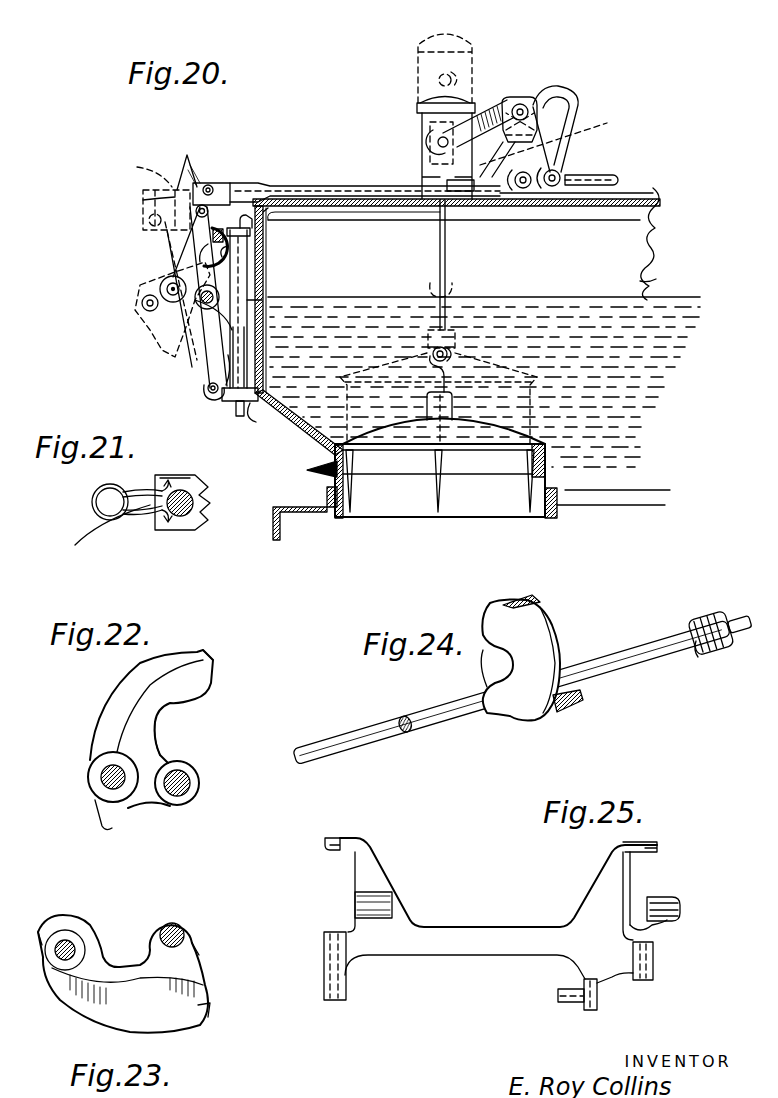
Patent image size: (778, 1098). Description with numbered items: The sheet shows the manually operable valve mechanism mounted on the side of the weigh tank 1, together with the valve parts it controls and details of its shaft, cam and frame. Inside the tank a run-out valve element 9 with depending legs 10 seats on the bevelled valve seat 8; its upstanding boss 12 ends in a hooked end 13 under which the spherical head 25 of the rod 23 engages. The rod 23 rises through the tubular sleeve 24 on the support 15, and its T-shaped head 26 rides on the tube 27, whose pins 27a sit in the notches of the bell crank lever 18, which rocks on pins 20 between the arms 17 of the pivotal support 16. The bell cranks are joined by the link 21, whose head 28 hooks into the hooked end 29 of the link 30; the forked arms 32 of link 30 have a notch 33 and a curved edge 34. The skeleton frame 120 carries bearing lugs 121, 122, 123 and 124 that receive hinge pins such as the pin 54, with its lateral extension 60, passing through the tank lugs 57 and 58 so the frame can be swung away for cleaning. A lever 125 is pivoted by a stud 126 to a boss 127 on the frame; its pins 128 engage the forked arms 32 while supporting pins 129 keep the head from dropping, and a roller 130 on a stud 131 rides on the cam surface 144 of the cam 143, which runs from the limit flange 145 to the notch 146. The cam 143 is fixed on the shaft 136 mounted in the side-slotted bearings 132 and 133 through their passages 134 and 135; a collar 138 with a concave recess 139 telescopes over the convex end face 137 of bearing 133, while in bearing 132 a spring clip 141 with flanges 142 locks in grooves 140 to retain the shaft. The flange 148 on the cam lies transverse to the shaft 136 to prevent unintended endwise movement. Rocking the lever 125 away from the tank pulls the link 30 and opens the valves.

In FIG. 20, the weigh tank 1 is at (297, 427).
In FIG. 20, the bevelled valve seat 8 is at (512, 438).
In FIG. 20, the run-out valve element 9 is at (444, 432).
In FIG. 20, the depending legs 10 is at (355, 505).
In FIG. 20, the upstanding boss 12 is at (449, 412).
In FIG. 20, the hooked end 13 is at (417, 360).
In FIG. 20, the support 15 is at (653, 182).
In FIG. 20, the pivotal support 16 is at (557, 158).
In FIG. 20, the arms 17 is at (520, 104).
In FIG. 20, the bell crank lever 18 is at (562, 107).
In FIG. 20, the pins 20 is at (527, 104).
In FIG. 20, the link 21 is at (593, 172).
In FIG. 20, the link or rod 23 is at (447, 257).
In FIG. 20, the tubular sleeve 24 is at (443, 197).
In FIG. 20, the spherical head 25 is at (448, 348).
In FIG. 20, the T-shaped head 26 is at (417, 52).
In FIG. 20, the tube 27 is at (417, 73).
In FIG. 20, the pins 27a is at (436, 138).
In FIG. 20, the head 28 is at (520, 190).
In FIG. 20, the hooked end 29 is at (530, 190).
In FIG. 20, the link 30 is at (333, 177).
In FIG. 20, the forked arms 32 is at (260, 170).
In FIG. 20, the notch 33 is at (189, 164).
In FIG. 20, the curved edge 34 is at (170, 197).
In FIG. 20, the pin 54 is at (247, 303).
In FIG. 20, the bearing boss 57 is at (252, 240).
In FIG. 20, the bearing boss 58 is at (262, 410).
In FIG. 20, the lateral extension 60 is at (247, 222).
In FIG. 20, the skeleton frame 120 is at (247, 280).
In FIG. 25, the skeleton frame 120 is at (508, 925).
In FIG. 25, the bearing lug 121 is at (325, 845).
In FIG. 25, the bearing lug 122 is at (347, 992).
In FIG. 20, the bearing lug 123 is at (268, 225).
In FIG. 25, the bearing lug 123 is at (660, 848).
In FIG. 20, the bearing lug 124 is at (228, 368).
In FIG. 25, the bearing lug 124 is at (655, 965).
In FIG. 20, the lever 125 is at (230, 362).
In FIG. 20, the stud 126 is at (207, 389).
In FIG. 25, the stud 126 is at (558, 993).
In FIG. 20, the boss 127 is at (217, 407).
In FIG. 25, the boss 127 is at (598, 1000).
In FIG. 20, the pins 128 is at (210, 183).
In FIG. 20, the supporting pins 129 is at (149, 223).
In FIG. 20, the roller 130 is at (140, 297).
In FIG. 22, the roller 130 is at (103, 763).
In FIG. 23, the roller 130 is at (50, 960).
In FIG. 20, the stud 131 is at (170, 272).
In FIG. 21, the bearing 132 is at (212, 495).
In FIG. 25, the bearing 132 is at (385, 897).
In FIG. 25, the bearing 133 is at (668, 897).
In FIG. 21, the bearing passage 134 is at (185, 490).
In FIG. 25, the bearing passage 134 is at (357, 912).
In FIG. 25, the bearing passage 135 is at (683, 912).
In FIG. 20, the shaft 136 is at (223, 270).
In FIG. 21, the shaft 136 is at (195, 515).
In FIG. 22, the shaft 136 is at (187, 785).
In FIG. 23, the shaft 136 is at (178, 925).
In FIG. 24, the shaft 136 is at (631, 657).
In FIG. 25, the convex end face 137 is at (680, 905).
In FIG. 20, the collar 138 is at (207, 310).
In FIG. 24, the collar 138 is at (717, 615).
In FIG. 24, the concave recess 139 is at (703, 657).
In FIG. 21, the grooves 140 is at (170, 478).
In FIG. 21, the spring clip 141 is at (92, 500).
In FIG. 21, the flanges 142 is at (107, 537).
In FIG. 20, the cam 143 is at (230, 262).
In FIG. 22, the cam 143 is at (150, 750).
In FIG. 23, the cam 143 is at (185, 970).
In FIG. 24, the cam 143 is at (510, 720).
In FIG. 22, the cam surface 144 is at (143, 718).
In FIG. 22, the limit flange 145 is at (125, 822).
In FIG. 23, the limit flange 145 is at (205, 1000).
In FIG. 24, the limit flange 145 is at (573, 713).
In FIG. 20, the notch 146 is at (207, 237).
In FIG. 22, the notch 146 is at (200, 690).
In FIG. 23, the notch 146 is at (77, 930).
In FIG. 24, the notch 146 is at (537, 603).
In FIG. 20, the flange 148 is at (173, 260).
In FIG. 22, the flange 148 is at (117, 680).
In FIG. 23, the flange 148 is at (123, 974).
In FIG. 24, the flange 148 is at (521, 659).